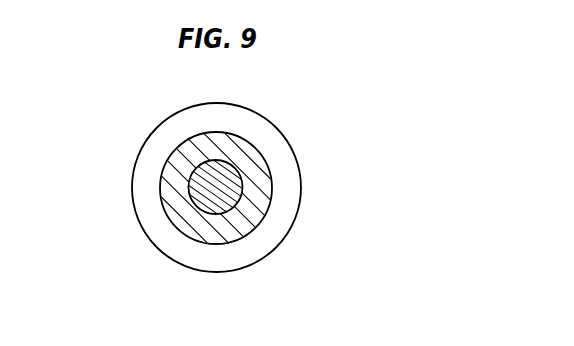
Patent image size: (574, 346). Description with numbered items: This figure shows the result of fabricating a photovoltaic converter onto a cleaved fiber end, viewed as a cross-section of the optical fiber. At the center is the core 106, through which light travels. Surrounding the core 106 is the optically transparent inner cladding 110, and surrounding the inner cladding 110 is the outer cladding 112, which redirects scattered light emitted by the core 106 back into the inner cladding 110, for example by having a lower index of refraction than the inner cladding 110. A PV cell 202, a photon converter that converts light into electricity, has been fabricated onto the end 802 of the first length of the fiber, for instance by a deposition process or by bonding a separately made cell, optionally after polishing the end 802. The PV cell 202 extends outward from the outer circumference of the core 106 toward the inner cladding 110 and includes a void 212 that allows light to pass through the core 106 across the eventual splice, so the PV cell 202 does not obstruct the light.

The end 802 is at (268, 100).
The outer cladding 112 is at (220, 116).
The inner cladding 110 is at (185, 226).
The PV cell 202 is at (249, 200).
The void 212 is at (211, 176).
The core 106 is at (190, 184).